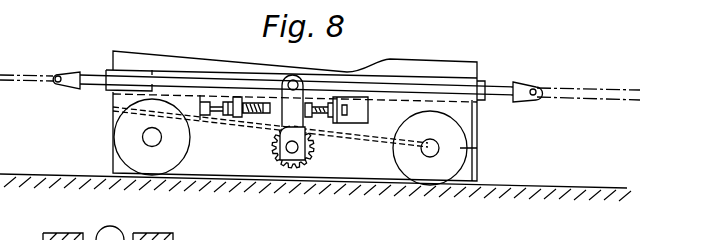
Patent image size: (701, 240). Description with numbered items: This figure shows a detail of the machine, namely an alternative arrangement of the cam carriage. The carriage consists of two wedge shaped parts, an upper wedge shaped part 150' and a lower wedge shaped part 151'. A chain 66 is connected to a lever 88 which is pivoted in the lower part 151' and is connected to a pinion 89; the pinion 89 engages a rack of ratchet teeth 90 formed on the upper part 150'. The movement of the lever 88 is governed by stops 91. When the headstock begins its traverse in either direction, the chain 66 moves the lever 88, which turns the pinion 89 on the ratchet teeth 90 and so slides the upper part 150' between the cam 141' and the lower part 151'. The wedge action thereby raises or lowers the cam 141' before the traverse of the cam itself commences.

The chain 66 is at (557, 92).
The lever 88 is at (262, 125).
The pinion 89 is at (288, 167).
The rack of ratchet teeth 90 is at (363, 137).
The stops 91 is at (267, 97).
The cam 141' is at (295, 62).
The upper wedge shaped part 150' is at (310, 89).
The lower wedge shaped part 151' is at (305, 182).